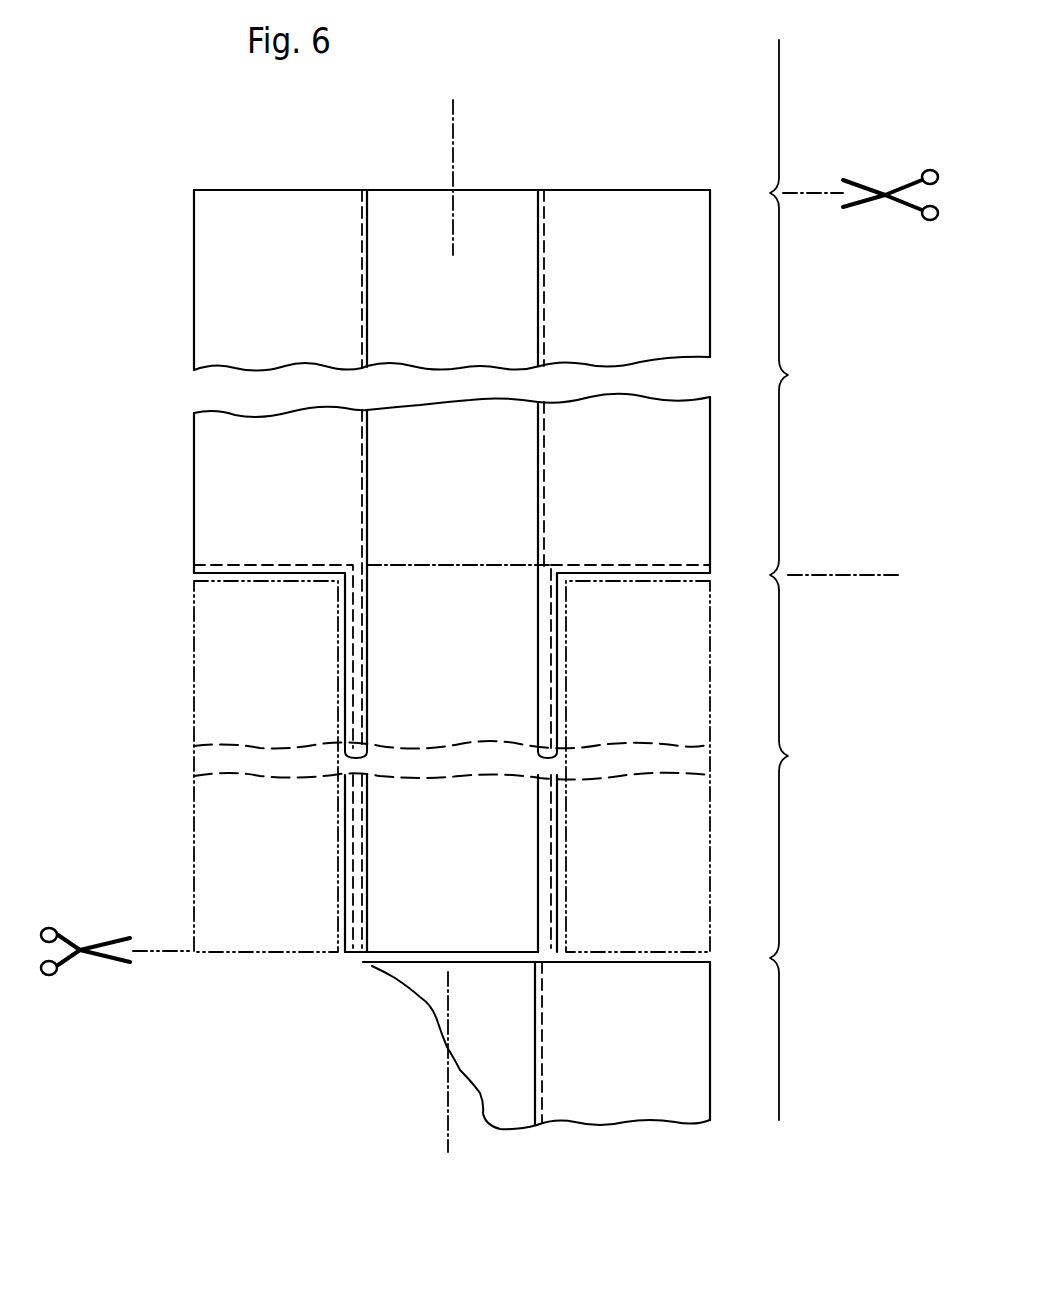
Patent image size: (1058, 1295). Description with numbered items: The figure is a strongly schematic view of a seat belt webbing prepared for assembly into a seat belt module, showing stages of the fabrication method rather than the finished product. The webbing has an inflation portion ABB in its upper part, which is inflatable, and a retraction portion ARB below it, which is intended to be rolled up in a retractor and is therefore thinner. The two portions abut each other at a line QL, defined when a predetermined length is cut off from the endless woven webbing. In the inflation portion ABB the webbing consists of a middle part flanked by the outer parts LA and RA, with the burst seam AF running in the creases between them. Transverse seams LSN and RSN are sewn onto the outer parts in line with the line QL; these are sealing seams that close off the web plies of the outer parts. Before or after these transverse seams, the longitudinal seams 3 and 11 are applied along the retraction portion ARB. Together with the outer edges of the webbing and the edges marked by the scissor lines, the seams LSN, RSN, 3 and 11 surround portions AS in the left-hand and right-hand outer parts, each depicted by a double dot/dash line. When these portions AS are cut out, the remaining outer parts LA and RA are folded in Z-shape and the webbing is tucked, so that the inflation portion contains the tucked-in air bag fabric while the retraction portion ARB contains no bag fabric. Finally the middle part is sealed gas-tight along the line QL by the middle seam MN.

The left-hand outer part LA is at (232, 226).
The right-hand outer part RA is at (678, 297).
The burst seam AF is at (360, 212).
The left transverse seam LSN is at (215, 560).
The right transverse seam RSN is at (628, 560).
The middle seam MN is at (455, 562).
The line between portions QL is at (838, 572).
The cut-out portion AS is at (215, 638).
The inflation portion ABB is at (807, 315).
The retraction portion ARB is at (807, 855).
The longitudinal seam 3 is at (380, 951).
The longitudinal seam 11 is at (552, 916).